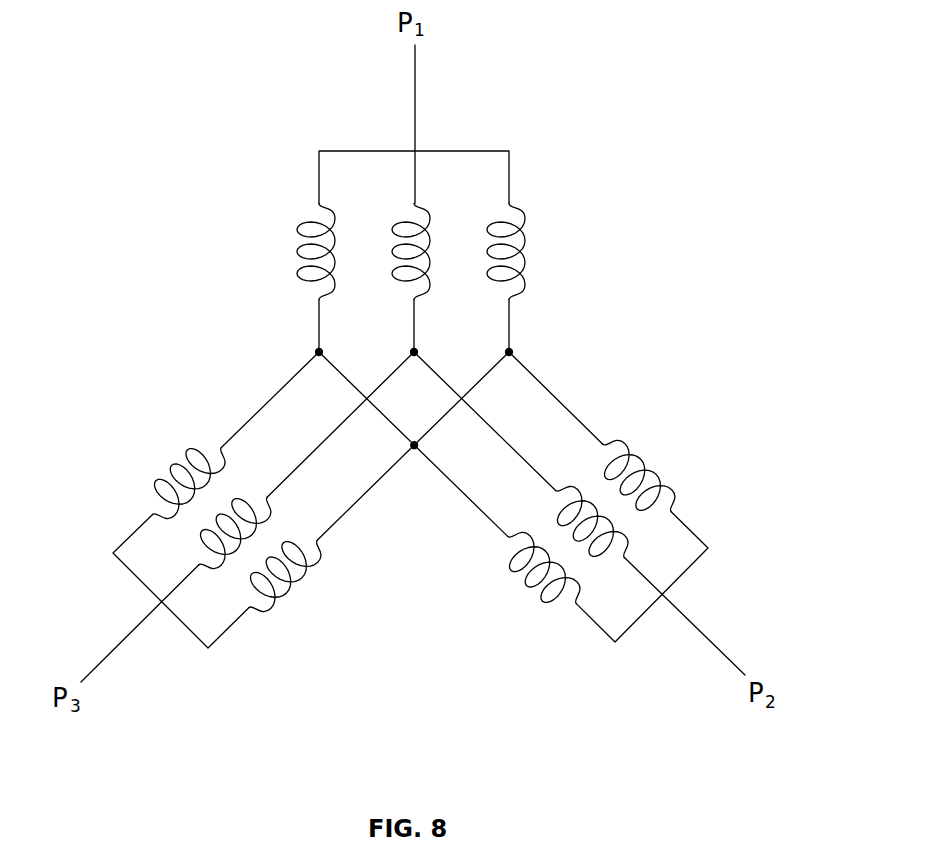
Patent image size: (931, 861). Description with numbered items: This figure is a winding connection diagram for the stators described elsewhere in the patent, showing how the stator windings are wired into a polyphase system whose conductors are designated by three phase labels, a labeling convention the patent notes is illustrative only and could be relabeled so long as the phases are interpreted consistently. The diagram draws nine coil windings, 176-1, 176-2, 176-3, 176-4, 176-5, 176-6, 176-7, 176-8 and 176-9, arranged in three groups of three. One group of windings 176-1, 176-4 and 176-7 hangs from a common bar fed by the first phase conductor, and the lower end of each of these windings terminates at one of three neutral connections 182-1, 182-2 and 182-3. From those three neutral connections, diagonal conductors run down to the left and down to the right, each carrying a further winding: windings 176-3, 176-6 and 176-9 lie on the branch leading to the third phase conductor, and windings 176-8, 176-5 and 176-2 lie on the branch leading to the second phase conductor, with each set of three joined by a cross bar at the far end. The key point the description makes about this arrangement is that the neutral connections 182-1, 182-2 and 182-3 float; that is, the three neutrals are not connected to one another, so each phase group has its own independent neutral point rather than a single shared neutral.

The inductor winding 176-1 is at (297, 228).
The inductor winding 176-2 is at (542, 602).
The inductor winding 176-3 is at (157, 479).
The inductor winding 176-4 is at (392, 228).
The inductor winding 176-5 is at (628, 539).
The inductor winding 176-6 is at (202, 532).
The inductor winding 176-7 is at (526, 240).
The inductor winding 176-8 is at (668, 482).
The inductor winding 176-9 is at (278, 602).
The neutral connection 182-1 is at (319, 352).
The neutral connection 182-2 is at (414, 352).
The neutral connection 182-3 is at (509, 352).